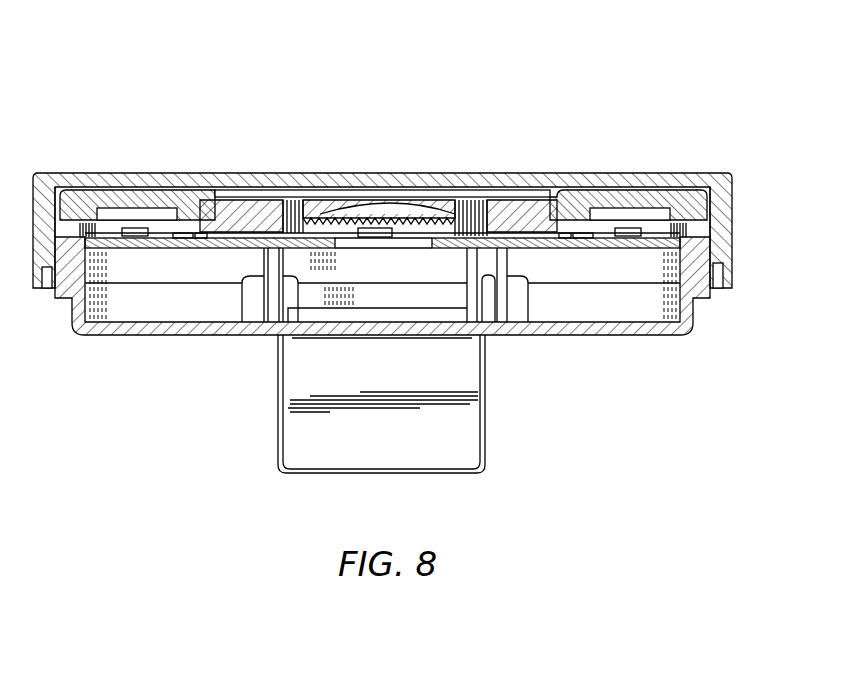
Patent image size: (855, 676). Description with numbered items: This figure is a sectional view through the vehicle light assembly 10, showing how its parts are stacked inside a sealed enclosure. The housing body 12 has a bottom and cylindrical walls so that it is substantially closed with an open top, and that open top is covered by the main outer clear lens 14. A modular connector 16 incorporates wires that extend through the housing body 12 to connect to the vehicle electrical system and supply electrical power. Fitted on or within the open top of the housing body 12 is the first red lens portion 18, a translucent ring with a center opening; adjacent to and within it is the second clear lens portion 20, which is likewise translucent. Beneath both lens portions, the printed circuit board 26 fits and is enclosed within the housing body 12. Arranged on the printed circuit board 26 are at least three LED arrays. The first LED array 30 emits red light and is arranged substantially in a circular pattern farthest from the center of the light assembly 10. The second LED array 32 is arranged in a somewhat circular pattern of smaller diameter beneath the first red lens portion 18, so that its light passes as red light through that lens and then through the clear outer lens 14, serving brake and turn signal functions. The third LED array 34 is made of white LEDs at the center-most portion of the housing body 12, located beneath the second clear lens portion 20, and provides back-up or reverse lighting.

The light assembly 10 is at (606, 63).
The housing body 12 is at (697, 316).
The main outer clear lens 14 is at (435, 177).
The modular connector 16 is at (455, 437).
The first red lens portion 18 is at (132, 185).
The second clear lens portion 20 is at (350, 203).
The printed circuit board 26 is at (220, 248).
The first LED array 30 is at (130, 243).
The second LED array 32 is at (183, 248).
The third LED array 34 is at (282, 233).